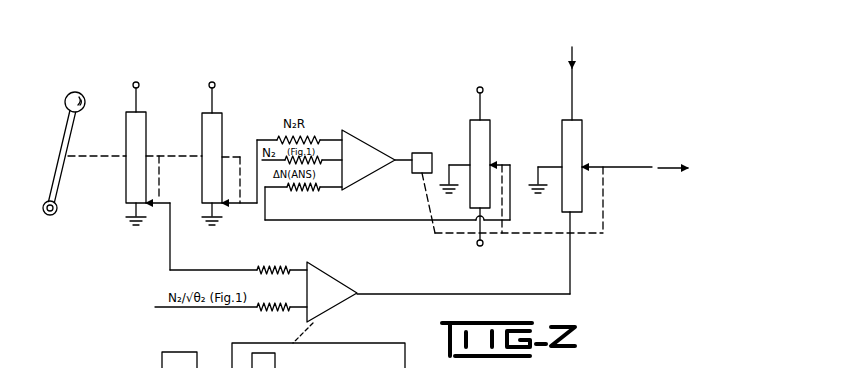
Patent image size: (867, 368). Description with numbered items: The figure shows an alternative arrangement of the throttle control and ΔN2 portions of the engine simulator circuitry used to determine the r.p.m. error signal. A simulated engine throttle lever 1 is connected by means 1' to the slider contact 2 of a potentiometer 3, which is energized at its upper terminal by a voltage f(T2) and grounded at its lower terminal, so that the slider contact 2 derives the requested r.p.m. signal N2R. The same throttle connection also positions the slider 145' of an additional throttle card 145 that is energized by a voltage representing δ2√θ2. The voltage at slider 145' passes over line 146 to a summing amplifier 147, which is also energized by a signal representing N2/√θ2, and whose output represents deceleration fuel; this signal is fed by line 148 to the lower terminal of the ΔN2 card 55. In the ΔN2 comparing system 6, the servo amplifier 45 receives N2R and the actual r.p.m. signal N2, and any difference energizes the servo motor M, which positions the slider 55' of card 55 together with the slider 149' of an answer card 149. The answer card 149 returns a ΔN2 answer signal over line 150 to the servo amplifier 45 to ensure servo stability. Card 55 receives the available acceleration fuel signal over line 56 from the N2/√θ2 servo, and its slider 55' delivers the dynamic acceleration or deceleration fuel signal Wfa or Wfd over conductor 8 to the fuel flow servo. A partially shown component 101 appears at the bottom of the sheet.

The simulated engine throttle lever 1 is at (59, 153).
The connecting means 1' is at (154, 179).
The throttle card 145 is at (120, 147).
The slider 145' is at (149, 225).
The potentiometer 3 is at (222, 135).
The slider contact 2 is at (227, 205).
The servo amplifier 45 is at (368, 143).
The comparing system 6 is at (406, 142).
The line 150 is at (365, 220).
The answer card 149 is at (461, 167).
The slider 149' is at (512, 184).
The ΔN2 card 55 is at (555, 165).
The slider 55' is at (627, 148).
The line 56 is at (572, 102).
The conductor 8 is at (625, 168).
The line 146 is at (198, 270).
The summing amplifier 147 is at (330, 277).
The line 148 is at (486, 294).
The component 101 is at (215, 364).